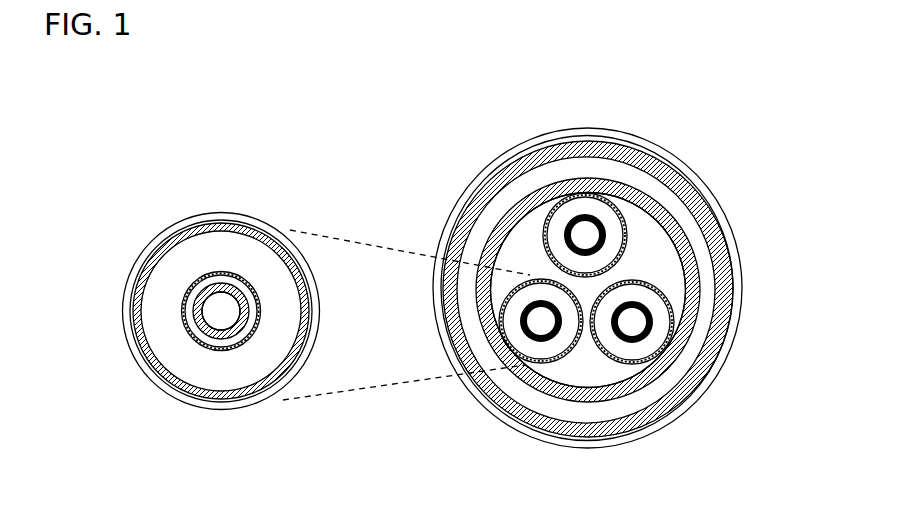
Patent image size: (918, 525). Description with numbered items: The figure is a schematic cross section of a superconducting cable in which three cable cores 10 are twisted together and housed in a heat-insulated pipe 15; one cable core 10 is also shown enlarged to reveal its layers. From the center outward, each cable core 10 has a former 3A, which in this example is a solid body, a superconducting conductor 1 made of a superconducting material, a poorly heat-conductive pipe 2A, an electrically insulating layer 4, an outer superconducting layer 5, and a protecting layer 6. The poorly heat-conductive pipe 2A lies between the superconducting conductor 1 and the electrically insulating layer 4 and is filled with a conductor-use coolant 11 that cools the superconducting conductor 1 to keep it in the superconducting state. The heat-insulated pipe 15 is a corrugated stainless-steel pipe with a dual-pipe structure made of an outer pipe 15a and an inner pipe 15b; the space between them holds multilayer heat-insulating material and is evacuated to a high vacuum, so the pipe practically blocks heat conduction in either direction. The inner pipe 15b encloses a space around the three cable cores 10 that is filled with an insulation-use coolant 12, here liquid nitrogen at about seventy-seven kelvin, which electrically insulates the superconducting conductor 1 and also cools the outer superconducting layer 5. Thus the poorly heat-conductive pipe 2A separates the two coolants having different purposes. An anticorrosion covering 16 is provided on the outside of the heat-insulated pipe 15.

The superconducting conductor 1 is at (157, 311).
The poorly heat-conductive pipe 2A is at (155, 328).
The former 3A is at (159, 301).
The electrically insulating layer 4 is at (186, 334).
The outer superconducting layer 5 is at (221, 342).
The protecting layer 6 is at (221, 339).
The cable core 10 is at (367, 279).
The conductor-use coolant 11 is at (221, 260).
The insulation-use coolant 12 is at (649, 290).
The heat-insulated pipe 15 is at (638, 261).
The outer pipe 15a is at (611, 289).
The inner pipe 15b is at (789, 163).
The anticorrosion covering 16 is at (625, 288).